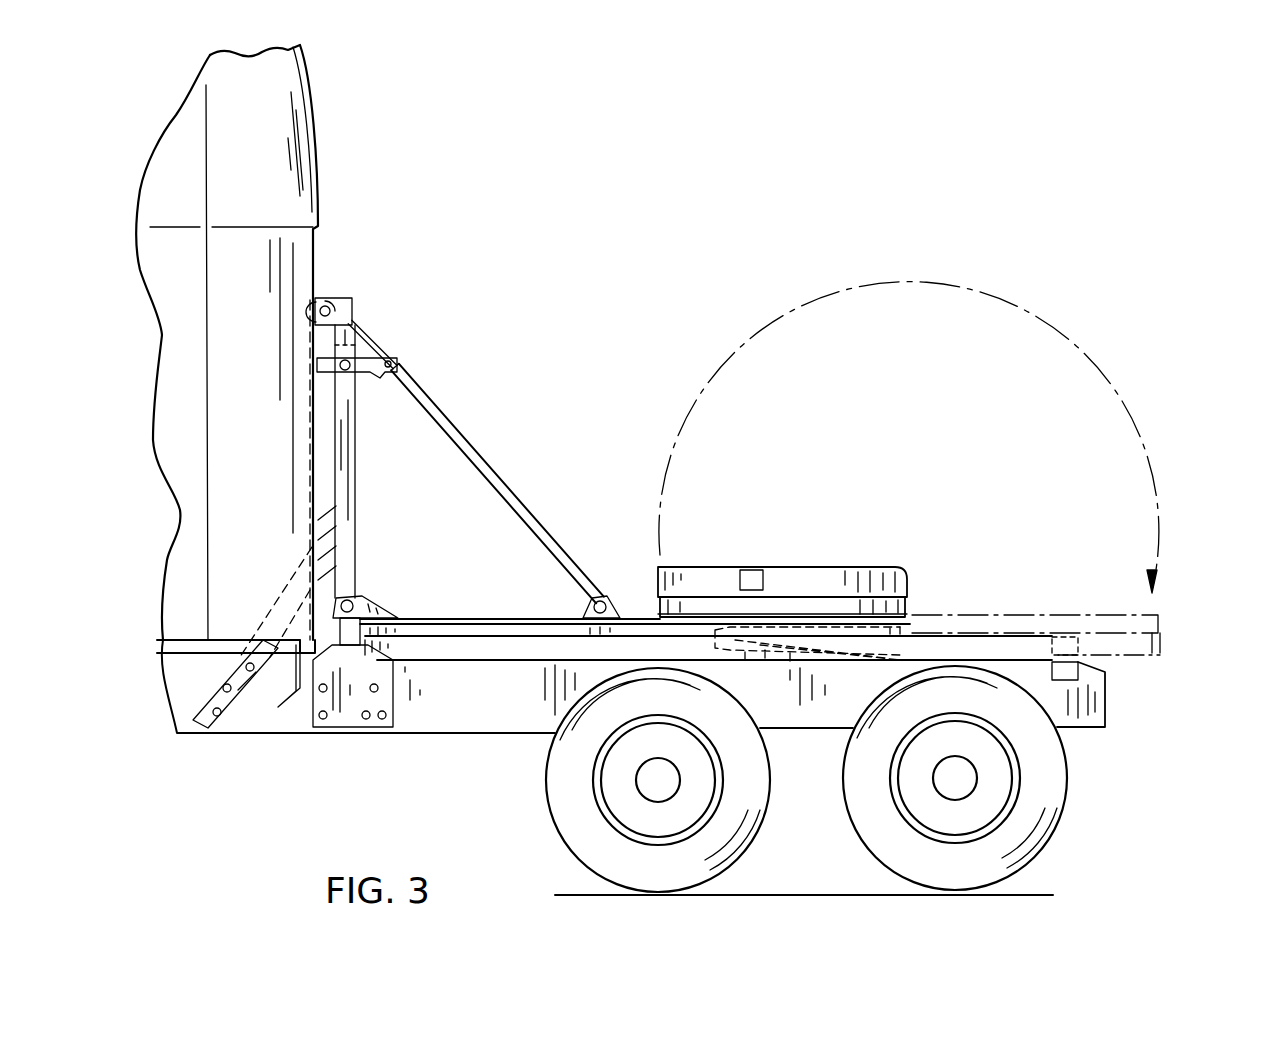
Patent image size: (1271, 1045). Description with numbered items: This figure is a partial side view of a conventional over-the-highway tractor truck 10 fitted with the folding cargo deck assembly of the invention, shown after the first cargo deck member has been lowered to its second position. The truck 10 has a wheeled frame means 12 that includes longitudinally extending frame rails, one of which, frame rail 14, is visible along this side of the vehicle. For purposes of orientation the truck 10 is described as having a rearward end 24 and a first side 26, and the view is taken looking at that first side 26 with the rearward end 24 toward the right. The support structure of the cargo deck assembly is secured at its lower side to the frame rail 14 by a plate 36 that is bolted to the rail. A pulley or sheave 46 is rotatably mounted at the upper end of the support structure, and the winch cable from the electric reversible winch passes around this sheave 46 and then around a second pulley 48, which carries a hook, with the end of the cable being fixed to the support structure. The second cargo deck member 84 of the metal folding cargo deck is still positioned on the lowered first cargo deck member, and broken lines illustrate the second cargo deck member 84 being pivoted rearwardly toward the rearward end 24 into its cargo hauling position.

The truck 10 is at (290, 750).
The wheeled frame means 12 is at (536, 771).
The frame rail 14 is at (490, 712).
The rearward end 24 is at (1140, 692).
The first side 26 is at (812, 800).
The plate 36 is at (345, 712).
The pulley or sheave 46 is at (328, 298).
The pulley 48 is at (607, 596).
The second cargo deck member 84 is at (830, 563).